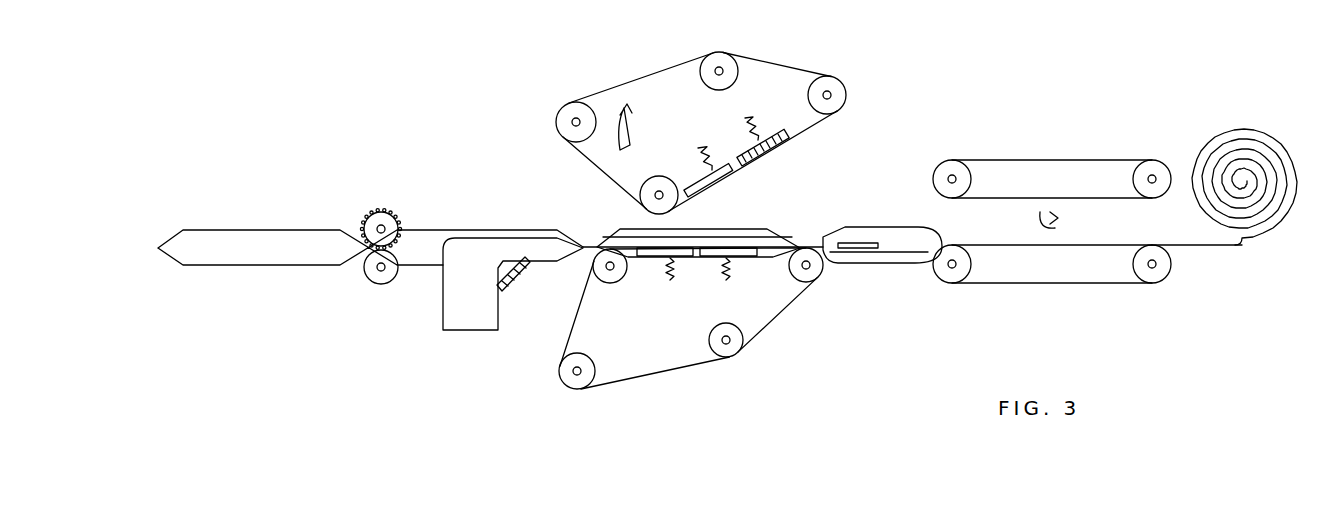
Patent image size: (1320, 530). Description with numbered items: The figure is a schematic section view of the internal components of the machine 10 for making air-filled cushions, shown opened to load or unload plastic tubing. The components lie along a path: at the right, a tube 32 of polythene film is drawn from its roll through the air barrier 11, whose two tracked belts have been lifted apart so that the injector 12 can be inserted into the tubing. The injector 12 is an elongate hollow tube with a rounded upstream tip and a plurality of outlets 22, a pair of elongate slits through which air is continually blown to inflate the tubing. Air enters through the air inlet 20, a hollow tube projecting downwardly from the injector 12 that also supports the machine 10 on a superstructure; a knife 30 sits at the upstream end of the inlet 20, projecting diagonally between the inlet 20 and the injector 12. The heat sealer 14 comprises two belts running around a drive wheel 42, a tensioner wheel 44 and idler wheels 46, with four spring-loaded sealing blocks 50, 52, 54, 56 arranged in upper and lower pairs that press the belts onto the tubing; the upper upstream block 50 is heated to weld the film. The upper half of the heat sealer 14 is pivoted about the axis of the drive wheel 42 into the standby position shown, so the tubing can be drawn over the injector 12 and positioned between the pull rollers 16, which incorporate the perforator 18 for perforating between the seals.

The machine 10 is at (402, 125).
The air barrier 11 is at (1033, 160).
The injector 12 is at (918, 262).
The heat sealer 14 is at (788, 317).
The pull rollers 16 is at (372, 281).
The perforator 18 is at (378, 212).
The air inlet 20 is at (460, 330).
The outlets 22 is at (860, 252).
The knife 30 is at (510, 288).
The tube of polythene film 32 is at (1188, 170).
The drive wheel 42 is at (560, 115).
The tensioner wheel 44 is at (731, 60).
The idler wheel 46 is at (836, 78).
The upper heated sealing block 50 is at (790, 142).
The heat sealing block 52 is at (745, 258).
The upper sealing block 54 is at (725, 178).
The heat sealing block 56 is at (650, 258).